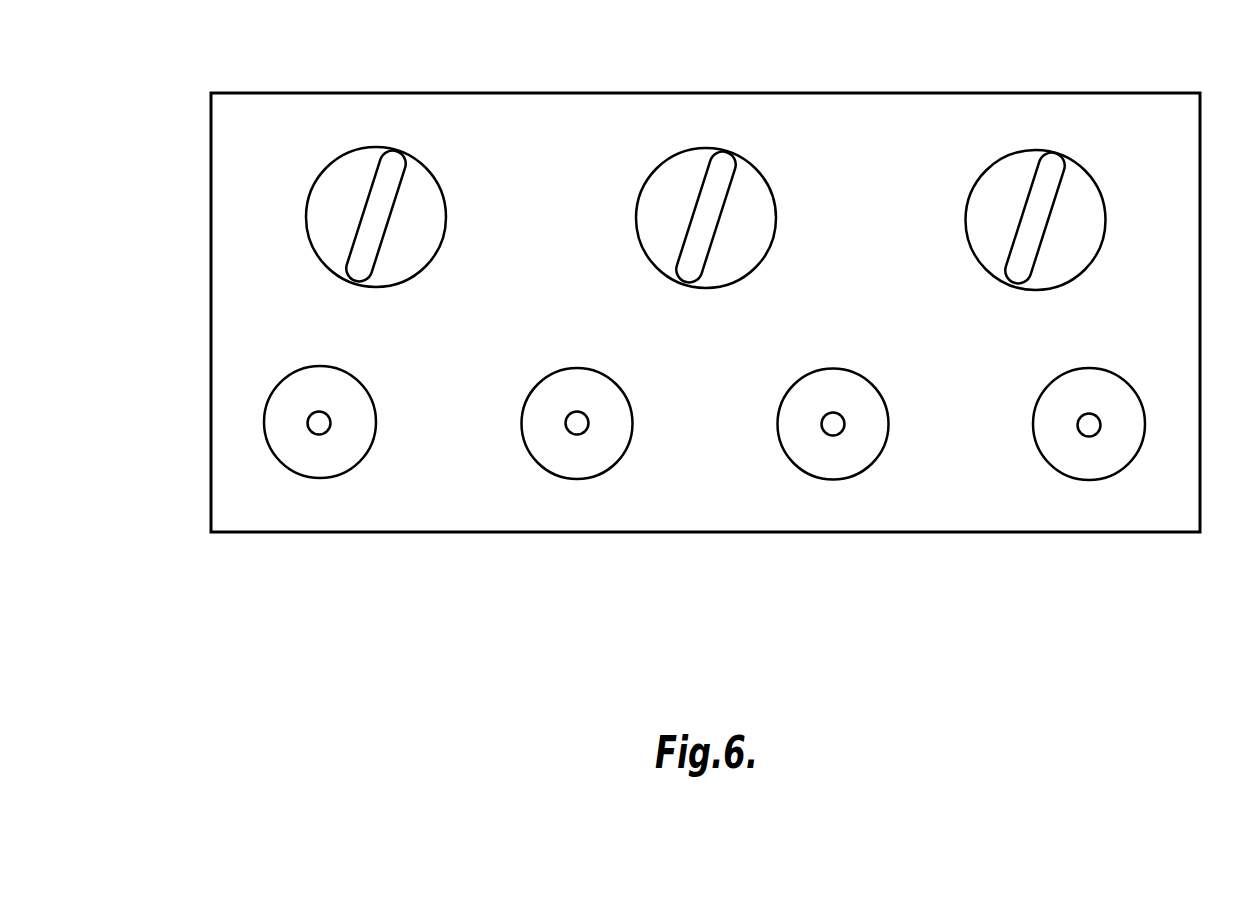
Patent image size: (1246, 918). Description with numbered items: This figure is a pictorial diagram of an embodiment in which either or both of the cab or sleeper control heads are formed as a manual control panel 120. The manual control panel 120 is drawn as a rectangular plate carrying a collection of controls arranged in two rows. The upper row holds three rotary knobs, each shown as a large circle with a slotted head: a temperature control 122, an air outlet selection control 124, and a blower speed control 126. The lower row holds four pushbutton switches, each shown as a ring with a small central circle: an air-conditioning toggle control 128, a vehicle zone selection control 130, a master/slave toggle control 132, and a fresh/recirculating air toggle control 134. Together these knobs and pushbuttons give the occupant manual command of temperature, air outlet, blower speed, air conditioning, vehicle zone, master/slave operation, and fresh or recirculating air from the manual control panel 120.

The manual control panel 120 is at (287, 321).
The temperature control 122 is at (345, 192).
The air outlet selection control 124 is at (680, 185).
The blower speed control 126 is at (1073, 213).
The air-conditioning toggle control 128 is at (322, 443).
The vehicle zone selection control 130 is at (597, 453).
The master/slave toggle control 132 is at (842, 450).
The fresh/recirculating air toggle control 134 is at (1097, 450).